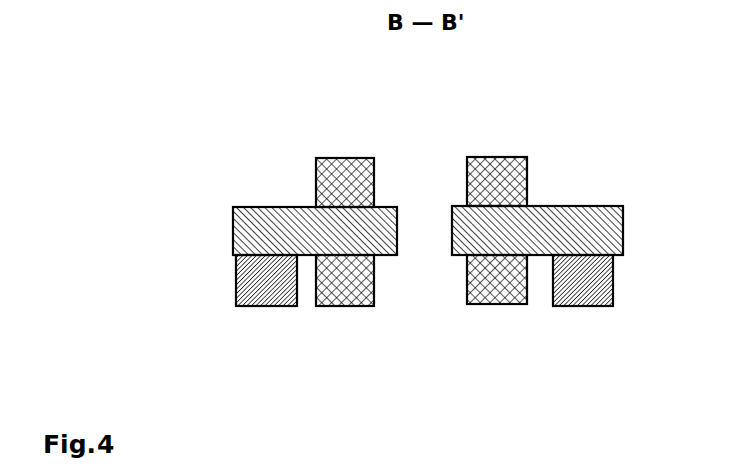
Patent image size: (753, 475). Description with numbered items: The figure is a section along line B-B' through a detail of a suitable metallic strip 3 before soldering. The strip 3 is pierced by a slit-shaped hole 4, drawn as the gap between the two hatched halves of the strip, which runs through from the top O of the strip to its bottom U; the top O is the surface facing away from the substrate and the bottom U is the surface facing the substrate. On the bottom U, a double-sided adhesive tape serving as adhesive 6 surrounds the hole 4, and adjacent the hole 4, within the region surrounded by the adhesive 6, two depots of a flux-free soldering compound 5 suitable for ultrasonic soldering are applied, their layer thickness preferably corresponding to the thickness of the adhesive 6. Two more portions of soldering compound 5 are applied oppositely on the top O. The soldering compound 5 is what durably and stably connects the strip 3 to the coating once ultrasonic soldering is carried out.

The metallic strip 3 is at (598, 223).
The hole 4 is at (427, 231).
The soldering compound 5 is at (340, 183).
The adhesive 6 is at (236, 279).
The top O is at (269, 206).
The bottom U is at (451, 260).